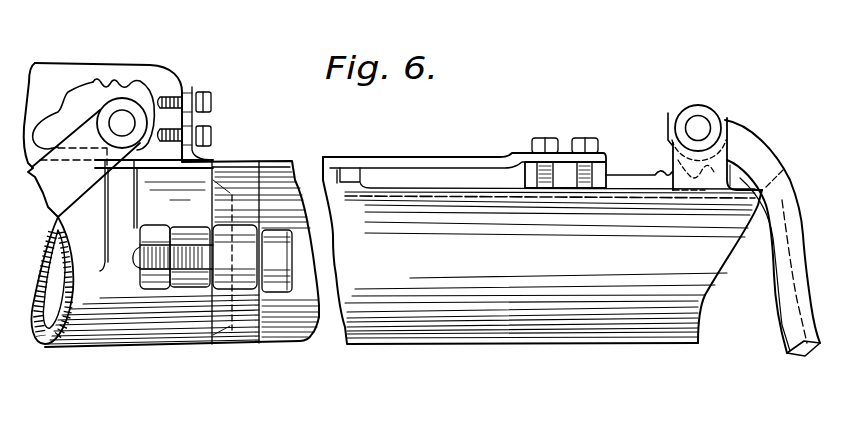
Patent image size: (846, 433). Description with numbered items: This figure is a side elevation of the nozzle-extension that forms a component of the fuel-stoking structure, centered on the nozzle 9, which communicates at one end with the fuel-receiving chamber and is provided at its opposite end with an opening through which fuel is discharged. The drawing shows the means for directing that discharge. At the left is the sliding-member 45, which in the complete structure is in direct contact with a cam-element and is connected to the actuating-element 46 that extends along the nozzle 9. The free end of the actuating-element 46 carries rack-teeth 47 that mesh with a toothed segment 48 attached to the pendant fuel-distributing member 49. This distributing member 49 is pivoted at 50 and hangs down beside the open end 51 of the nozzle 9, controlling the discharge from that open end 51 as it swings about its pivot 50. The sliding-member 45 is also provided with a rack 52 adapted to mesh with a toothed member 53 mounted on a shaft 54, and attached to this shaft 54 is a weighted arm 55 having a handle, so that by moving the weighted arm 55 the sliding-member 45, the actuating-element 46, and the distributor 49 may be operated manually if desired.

The nozzle 9 is at (610, 332).
The sliding-member 45 is at (180, 62).
The actuating-element 46 is at (240, 158).
The rack-teeth 47 is at (654, 172).
The toothed segment 48 is at (671, 120).
The pendant fuel-distributing member 49 is at (768, 162).
The pivot 50 is at (709, 128).
The open end 51 is at (707, 297).
The rack 52 is at (93, 81).
The toothed member 53 is at (116, 92).
The shaft 54 is at (125, 127).
The weighted arm 55 is at (73, 180).